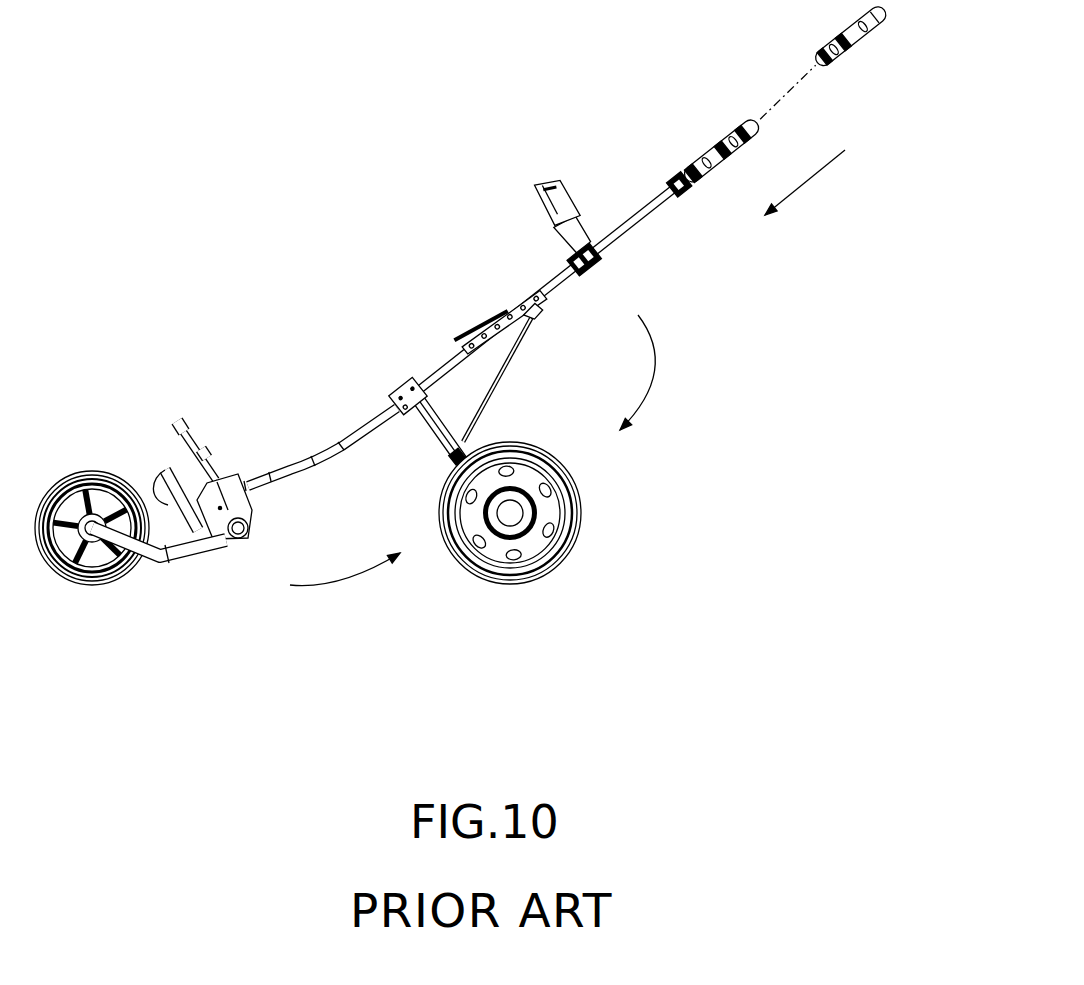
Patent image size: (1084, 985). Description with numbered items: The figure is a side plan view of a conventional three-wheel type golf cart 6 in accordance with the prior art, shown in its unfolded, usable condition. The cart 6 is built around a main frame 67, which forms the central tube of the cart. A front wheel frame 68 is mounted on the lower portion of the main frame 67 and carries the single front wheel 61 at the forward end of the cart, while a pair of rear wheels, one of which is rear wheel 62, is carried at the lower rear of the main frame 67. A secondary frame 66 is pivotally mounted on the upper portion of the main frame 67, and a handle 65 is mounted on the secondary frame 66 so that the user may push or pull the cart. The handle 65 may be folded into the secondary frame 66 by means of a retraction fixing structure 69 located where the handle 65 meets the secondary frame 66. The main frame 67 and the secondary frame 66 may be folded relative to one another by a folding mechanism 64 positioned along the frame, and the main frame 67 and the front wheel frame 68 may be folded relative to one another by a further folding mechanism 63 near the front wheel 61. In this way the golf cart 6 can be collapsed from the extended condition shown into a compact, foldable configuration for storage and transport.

The golf cart 6 is at (175, 118).
The front wheel 61 is at (95, 470).
The rear wheel 62 is at (566, 543).
The folding mechanism 63 is at (233, 577).
The folding mechanism 64 is at (485, 303).
The handle 65 is at (782, 91).
The secondary frame 66 is at (643, 203).
The main frame 67 is at (363, 416).
The front wheel frame 68 is at (167, 562).
The retraction fixing structure 69 is at (678, 174).